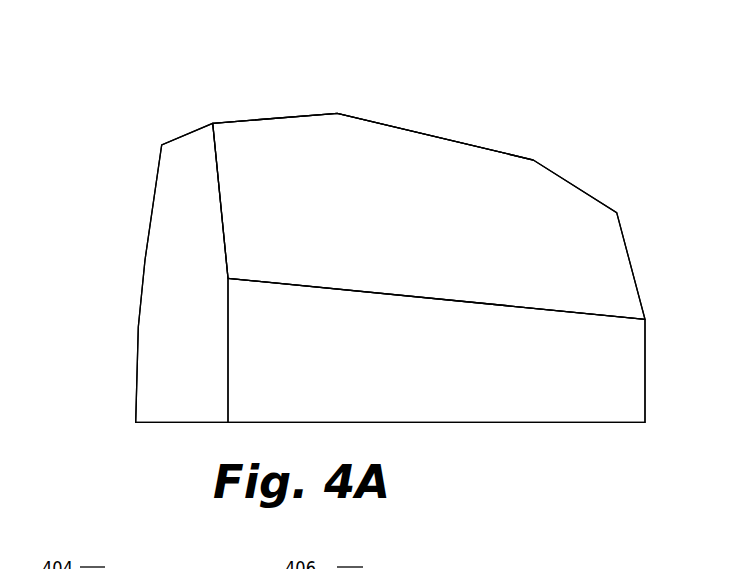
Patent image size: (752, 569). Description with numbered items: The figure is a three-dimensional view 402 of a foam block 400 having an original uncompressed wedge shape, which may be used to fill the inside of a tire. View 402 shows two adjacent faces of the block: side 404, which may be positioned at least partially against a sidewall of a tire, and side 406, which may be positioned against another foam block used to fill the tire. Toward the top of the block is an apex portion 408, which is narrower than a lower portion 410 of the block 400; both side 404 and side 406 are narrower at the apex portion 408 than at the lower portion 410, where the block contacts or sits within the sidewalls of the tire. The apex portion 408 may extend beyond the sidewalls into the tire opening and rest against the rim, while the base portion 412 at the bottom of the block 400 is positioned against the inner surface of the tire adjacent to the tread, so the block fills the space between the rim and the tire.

The block 400 is at (160, 68).
The view 402 is at (263, 82).
The side 404 is at (175, 193).
The side 406 is at (488, 227).
The apex portion 408 is at (425, 150).
The lower portion 410 is at (453, 292).
The base portion 412 is at (454, 409).